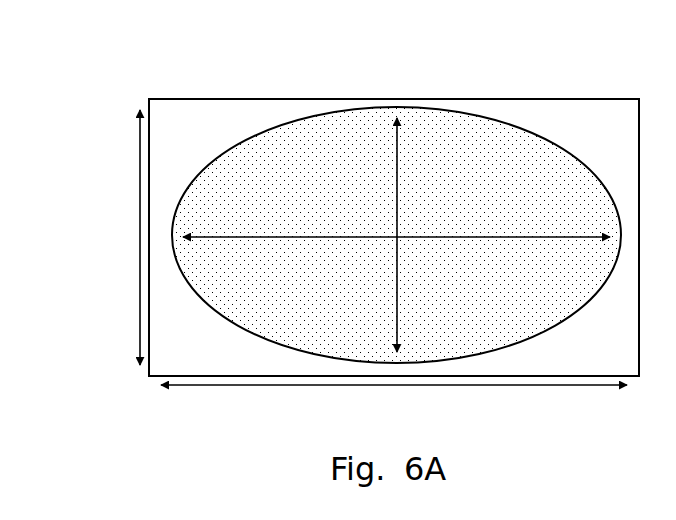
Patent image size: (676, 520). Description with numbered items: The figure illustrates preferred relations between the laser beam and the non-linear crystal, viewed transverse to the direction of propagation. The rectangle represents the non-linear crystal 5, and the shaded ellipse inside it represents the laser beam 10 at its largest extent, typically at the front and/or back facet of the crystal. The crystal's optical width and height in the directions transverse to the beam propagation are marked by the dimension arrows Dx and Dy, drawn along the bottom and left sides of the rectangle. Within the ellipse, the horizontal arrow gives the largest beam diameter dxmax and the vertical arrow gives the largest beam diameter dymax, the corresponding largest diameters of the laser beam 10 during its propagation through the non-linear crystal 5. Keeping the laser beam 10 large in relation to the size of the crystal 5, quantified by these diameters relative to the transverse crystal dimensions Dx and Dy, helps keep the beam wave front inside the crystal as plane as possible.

The non-linear crystal 5 is at (394, 237).
The laser beam 10 is at (396, 235).
The crystal height Dy is at (121, 237).
The crystal width Dx is at (394, 407).
The largest laser beam diameter in y direction dymax is at (438, 235).
The largest laser beam diameter in x direction dxmax is at (396, 255).